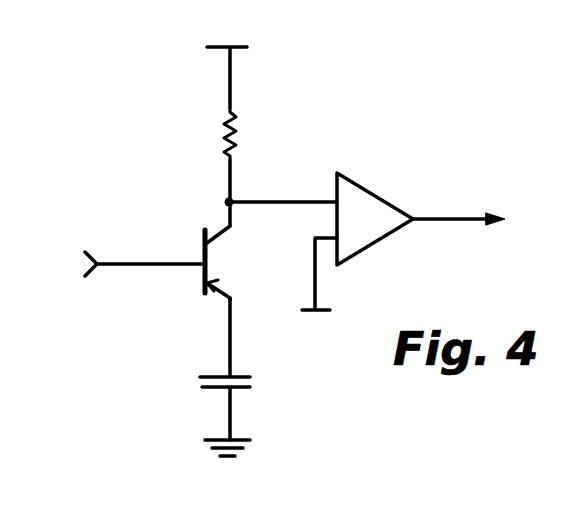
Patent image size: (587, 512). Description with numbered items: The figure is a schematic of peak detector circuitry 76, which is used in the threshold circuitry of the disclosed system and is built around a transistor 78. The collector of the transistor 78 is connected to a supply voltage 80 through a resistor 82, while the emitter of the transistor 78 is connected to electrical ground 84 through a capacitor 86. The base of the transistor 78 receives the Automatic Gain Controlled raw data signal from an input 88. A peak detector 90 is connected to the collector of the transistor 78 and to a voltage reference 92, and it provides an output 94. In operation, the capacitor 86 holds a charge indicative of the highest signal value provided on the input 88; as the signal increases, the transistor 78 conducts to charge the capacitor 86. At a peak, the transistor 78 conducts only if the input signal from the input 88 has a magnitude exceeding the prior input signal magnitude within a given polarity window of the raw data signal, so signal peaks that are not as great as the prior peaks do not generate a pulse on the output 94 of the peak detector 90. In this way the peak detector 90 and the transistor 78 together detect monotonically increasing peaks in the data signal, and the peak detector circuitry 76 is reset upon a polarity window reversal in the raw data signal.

The peak detector circuitry 76 is at (88, 114).
The transistor 78 is at (223, 263).
The supply voltage 80 is at (247, 46).
The resistor 82 is at (236, 125).
The electrical ground 84 is at (240, 450).
The capacitor 86 is at (240, 388).
The input 88 is at (128, 265).
The peak detector 90 is at (375, 219).
The voltage reference 92 is at (302, 311).
The output 94 is at (476, 220).